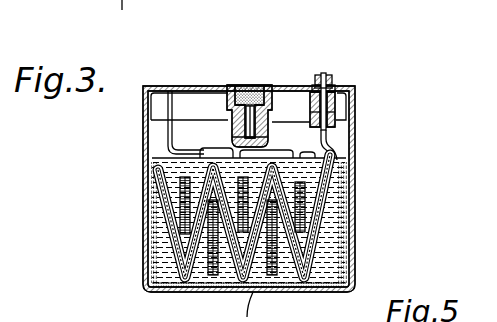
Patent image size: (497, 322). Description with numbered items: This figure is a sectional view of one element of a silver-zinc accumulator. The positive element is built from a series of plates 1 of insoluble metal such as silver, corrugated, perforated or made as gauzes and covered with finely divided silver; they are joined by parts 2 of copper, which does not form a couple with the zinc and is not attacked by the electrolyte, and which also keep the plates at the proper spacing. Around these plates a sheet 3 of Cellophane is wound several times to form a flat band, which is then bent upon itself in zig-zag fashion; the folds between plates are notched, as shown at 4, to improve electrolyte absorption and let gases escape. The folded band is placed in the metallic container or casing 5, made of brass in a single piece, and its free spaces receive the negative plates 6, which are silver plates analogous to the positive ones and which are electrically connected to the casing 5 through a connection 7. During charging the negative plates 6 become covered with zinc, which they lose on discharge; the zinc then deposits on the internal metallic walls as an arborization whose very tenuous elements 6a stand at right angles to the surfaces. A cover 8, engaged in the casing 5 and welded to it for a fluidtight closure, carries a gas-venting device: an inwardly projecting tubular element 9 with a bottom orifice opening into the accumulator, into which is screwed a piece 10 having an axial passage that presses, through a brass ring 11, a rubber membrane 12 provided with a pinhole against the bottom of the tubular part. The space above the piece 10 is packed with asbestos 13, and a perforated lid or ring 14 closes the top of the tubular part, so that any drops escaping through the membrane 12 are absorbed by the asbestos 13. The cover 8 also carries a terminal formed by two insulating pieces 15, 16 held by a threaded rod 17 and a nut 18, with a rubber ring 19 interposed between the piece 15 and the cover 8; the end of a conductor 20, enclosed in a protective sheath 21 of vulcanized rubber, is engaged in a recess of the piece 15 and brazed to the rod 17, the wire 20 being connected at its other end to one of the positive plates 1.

The positive plates 1 is at (172, 217).
The interconnecting parts 2 is at (166, 292).
The Cellophane sheet 3 is at (167, 235).
The notches 4 is at (199, 0).
The metallic container or casing 5 is at (355, 232).
The negative plates 6 is at (181, 192).
The arborization elements 6a is at (382, 262).
The connection 7 is at (205, 152).
The cover 8 is at (166, 88).
The tubular element 9 is at (273, 114).
The screwed piece 10 is at (262, 86).
The ring 11 is at (229, 121).
The membrane 12 is at (270, 142).
The asbestos packing 13 is at (234, 86).
The lid or ring 14 is at (244, 86).
The insulating piece 15 is at (338, 100).
The insulating piece 16 is at (335, 85).
The threaded rod 17 is at (323, 74).
The nut 18 is at (330, 77).
The rubber ring 19 is at (311, 86).
The conductor 20 is at (336, 143).
The protective sheath 21 is at (333, 136).